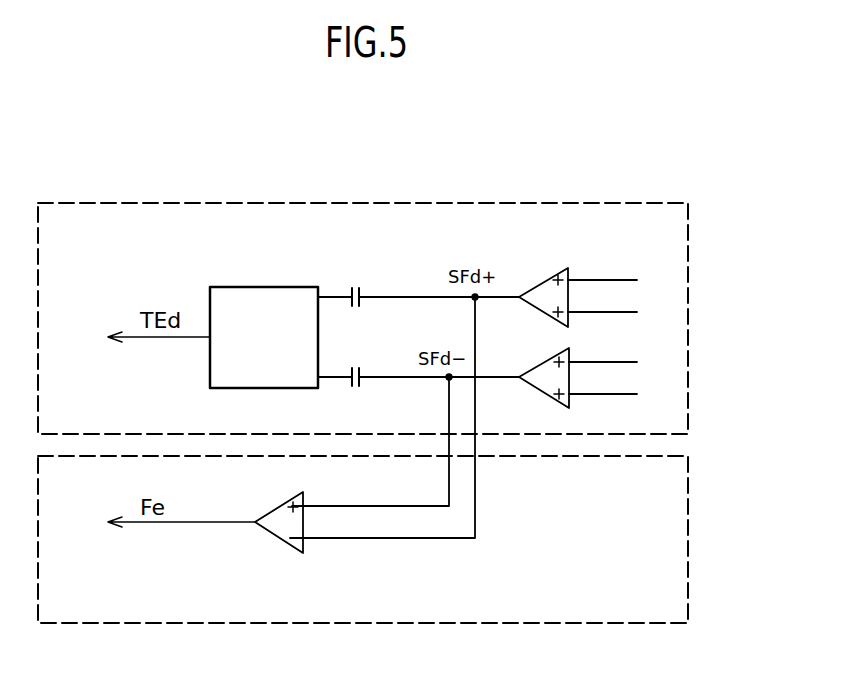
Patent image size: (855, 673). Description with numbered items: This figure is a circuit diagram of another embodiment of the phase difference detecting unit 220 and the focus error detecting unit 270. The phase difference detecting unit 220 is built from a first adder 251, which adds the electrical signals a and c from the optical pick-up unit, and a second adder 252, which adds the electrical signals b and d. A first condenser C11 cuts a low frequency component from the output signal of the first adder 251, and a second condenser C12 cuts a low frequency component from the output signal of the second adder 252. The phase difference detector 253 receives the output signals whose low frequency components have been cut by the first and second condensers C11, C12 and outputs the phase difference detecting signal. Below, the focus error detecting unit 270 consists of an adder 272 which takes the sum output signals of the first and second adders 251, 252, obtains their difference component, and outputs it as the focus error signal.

The phase difference detecting unit 220 is at (667, 354).
The focus error detecting unit 270 is at (667, 543).
The first adder 251 is at (552, 277).
The second adder 252 is at (552, 358).
The phase difference detector 253 is at (266, 289).
The adder 272 is at (278, 536).
The first condenser C11 is at (354, 282).
The second condenser C12 is at (354, 363).